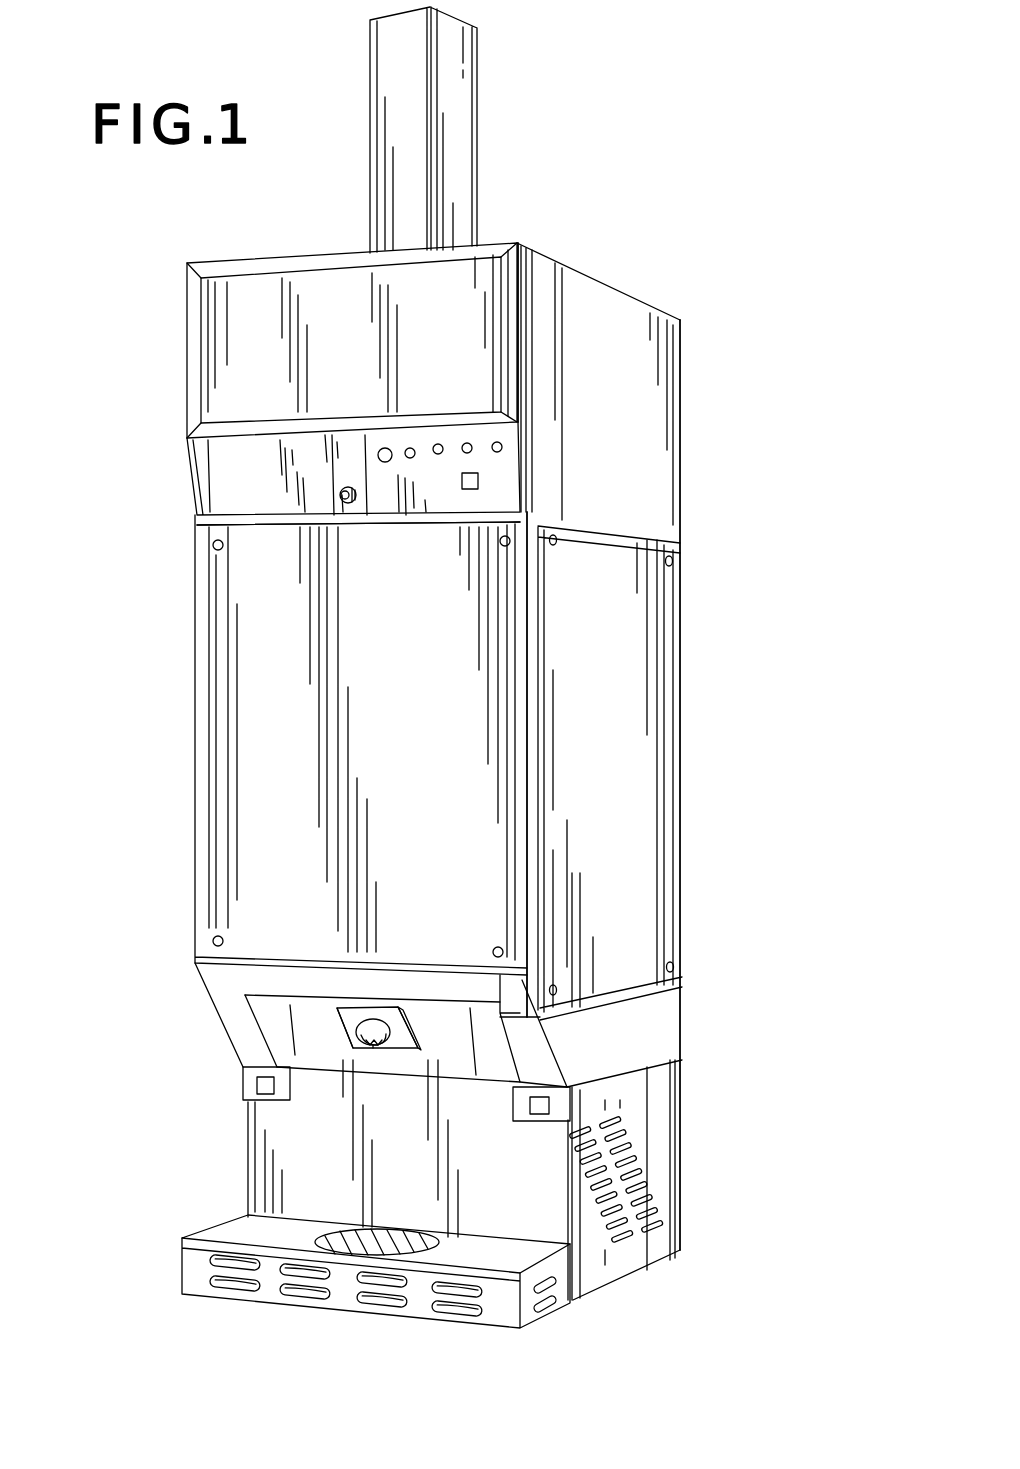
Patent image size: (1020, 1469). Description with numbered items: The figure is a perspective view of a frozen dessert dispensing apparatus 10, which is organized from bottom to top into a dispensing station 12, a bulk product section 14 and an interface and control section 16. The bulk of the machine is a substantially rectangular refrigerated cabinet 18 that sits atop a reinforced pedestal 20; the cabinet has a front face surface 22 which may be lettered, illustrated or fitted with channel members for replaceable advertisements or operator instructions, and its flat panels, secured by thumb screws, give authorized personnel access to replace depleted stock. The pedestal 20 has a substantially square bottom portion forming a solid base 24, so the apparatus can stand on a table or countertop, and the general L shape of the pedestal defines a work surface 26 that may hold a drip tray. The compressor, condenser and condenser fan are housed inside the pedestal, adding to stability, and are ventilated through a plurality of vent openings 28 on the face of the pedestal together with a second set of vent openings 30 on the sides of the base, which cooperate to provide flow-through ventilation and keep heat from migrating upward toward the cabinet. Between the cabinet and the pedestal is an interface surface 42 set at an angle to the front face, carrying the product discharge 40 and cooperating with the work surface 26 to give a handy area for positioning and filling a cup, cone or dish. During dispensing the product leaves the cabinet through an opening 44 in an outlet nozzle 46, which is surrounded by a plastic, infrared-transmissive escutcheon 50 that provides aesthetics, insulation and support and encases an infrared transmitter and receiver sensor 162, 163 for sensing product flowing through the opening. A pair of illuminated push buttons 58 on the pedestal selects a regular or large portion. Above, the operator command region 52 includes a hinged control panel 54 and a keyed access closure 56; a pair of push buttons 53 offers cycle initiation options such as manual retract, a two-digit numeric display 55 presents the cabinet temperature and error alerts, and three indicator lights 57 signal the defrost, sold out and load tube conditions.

The frozen dessert dispensing apparatus 10 is at (186, 655).
The dispensing station 12 is at (697, 1255).
The bulk product section 14 is at (698, 550).
The interface and control section 16 is at (697, 312).
The refrigerated cabinet 18 is at (641, 683).
The reinforced pedestal 20 is at (655, 1080).
The front face surface 22 is at (411, 717).
The solid base 24 is at (455, 1331).
The work surface 26 is at (245, 1232).
The vent openings 28 is at (237, 1290).
The second set of vent openings 30 is at (630, 1233).
The product discharge 40 is at (230, 1012).
The interface surface 42 is at (311, 1037).
The opening 44 is at (366, 1050).
The outlet nozzle 46 is at (413, 1045).
The escutcheon 50 is at (392, 1052).
The operator command region 52 is at (233, 472).
The push buttons 53 is at (405, 448).
The control panel 54 is at (450, 489).
The numeric display 55 is at (461, 489).
The keyed access closure 56 is at (340, 499).
The indicator lights 57 is at (496, 442).
The illuminated push buttons 58 is at (243, 1085).
The infrared transmitter sensor 162 is at (347, 1007).
The infrared receiver sensor 163 is at (397, 1030).